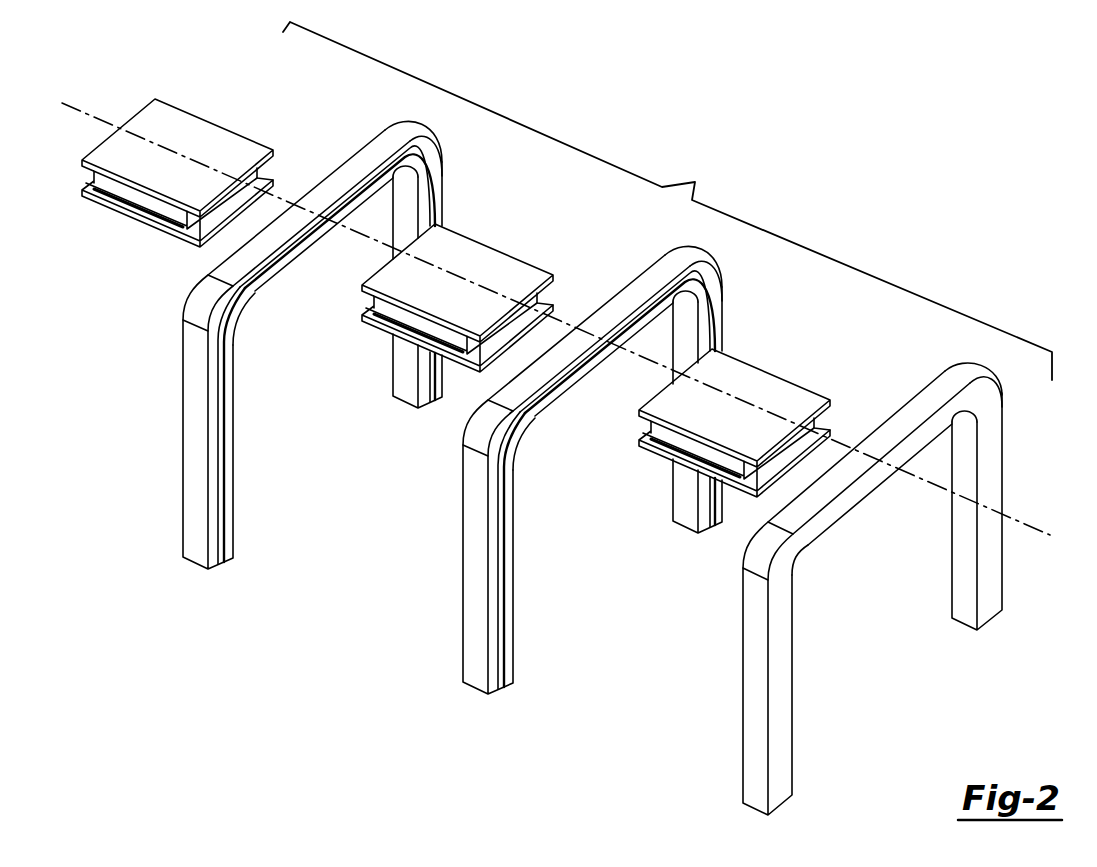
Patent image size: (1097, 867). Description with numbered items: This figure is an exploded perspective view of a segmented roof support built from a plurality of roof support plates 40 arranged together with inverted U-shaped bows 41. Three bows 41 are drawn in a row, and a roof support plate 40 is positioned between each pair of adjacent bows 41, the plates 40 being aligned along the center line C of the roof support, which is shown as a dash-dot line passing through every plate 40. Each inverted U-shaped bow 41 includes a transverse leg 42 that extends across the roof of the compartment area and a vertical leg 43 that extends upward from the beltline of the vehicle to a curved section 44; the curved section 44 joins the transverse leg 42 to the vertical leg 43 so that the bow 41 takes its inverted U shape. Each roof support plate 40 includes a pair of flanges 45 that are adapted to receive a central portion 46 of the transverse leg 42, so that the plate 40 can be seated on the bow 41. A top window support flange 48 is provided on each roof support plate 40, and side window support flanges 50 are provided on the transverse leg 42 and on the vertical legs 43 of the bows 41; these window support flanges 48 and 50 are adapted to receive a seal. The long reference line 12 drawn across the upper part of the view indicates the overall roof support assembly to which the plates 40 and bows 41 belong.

The support rail 12 is at (667, 201).
The roof support plate 40 is at (188, 130).
The inverted U-shaped bow 41 is at (551, 466).
The transverse leg 42 is at (230, 273).
The vertical leg 43 is at (196, 417).
The curved section 44 is at (426, 153).
The flange 45 is at (284, 162).
The central portion 46 is at (305, 220).
The top window support flange 48 is at (403, 325).
The side window support flange 50 is at (223, 497).
The center line C is at (1008, 520).